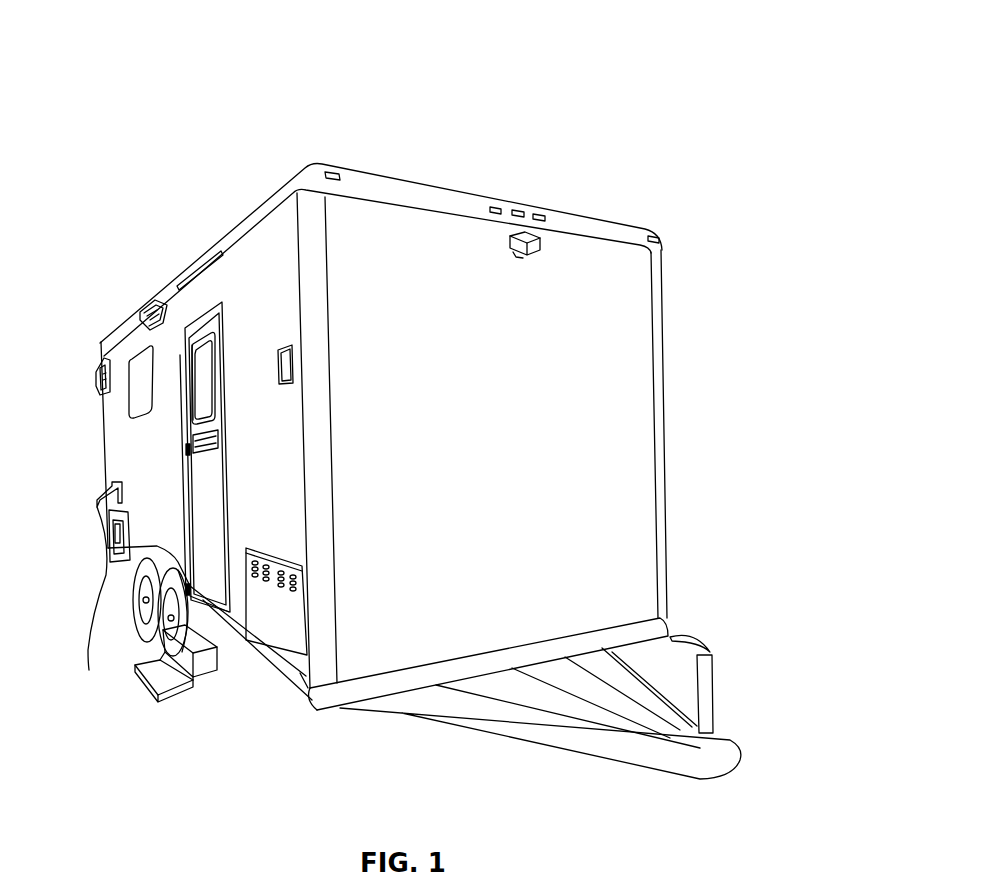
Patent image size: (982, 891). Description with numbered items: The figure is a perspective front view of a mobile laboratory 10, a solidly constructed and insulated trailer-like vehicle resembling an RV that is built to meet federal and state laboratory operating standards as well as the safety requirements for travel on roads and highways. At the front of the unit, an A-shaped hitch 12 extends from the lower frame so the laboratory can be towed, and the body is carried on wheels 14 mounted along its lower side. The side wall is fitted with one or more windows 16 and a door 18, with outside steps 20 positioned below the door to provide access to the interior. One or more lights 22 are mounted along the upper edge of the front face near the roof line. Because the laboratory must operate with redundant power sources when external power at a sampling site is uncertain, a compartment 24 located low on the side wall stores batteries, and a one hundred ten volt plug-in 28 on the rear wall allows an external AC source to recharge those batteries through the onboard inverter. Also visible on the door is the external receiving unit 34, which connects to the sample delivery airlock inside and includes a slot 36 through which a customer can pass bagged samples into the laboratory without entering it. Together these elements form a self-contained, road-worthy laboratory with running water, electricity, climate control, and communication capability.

The mobile laboratory 10 is at (578, 84).
The hitch 12 is at (657, 753).
The wheels 14 is at (171, 618).
The windows 16 is at (203, 360).
The door 18 is at (208, 487).
The outside steps 20 is at (160, 676).
The lights 22 is at (497, 207).
The compartment 24 is at (280, 624).
The 110 volt plug-in 28 is at (105, 485).
The external receiving unit 34 is at (230, 411).
The slot 36 is at (220, 441).